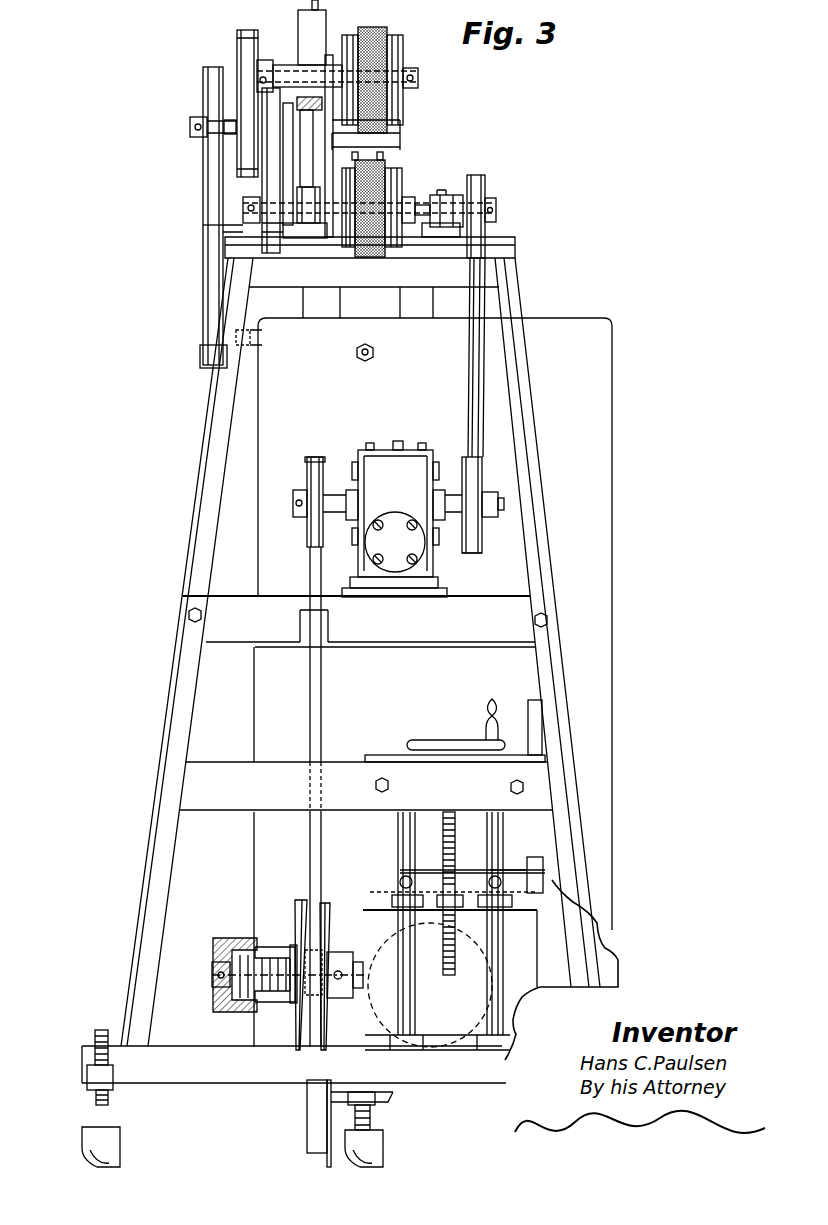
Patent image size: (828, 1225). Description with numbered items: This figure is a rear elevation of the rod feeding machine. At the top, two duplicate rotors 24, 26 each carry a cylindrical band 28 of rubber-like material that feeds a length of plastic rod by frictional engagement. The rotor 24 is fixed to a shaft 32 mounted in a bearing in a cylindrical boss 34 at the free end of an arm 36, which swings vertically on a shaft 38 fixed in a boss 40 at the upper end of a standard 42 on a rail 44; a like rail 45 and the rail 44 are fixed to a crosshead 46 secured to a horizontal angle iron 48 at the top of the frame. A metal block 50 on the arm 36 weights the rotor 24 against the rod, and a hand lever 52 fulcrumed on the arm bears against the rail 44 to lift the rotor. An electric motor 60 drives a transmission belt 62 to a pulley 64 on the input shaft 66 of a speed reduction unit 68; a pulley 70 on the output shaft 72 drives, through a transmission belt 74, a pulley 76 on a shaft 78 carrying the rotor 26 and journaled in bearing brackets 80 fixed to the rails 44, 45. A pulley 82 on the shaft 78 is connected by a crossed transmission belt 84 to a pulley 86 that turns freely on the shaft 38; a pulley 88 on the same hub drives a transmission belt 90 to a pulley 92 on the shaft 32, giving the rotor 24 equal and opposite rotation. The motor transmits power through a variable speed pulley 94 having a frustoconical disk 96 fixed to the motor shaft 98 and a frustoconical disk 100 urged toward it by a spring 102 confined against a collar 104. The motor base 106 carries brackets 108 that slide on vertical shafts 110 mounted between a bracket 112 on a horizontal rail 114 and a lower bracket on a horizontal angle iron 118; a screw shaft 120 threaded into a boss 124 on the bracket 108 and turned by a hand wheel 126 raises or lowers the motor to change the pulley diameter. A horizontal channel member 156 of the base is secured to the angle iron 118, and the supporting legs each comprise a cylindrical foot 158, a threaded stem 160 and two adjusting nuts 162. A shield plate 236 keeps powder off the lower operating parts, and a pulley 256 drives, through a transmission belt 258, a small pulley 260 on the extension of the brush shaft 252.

The rotor 24 is at (404, 113).
The rotor 26 is at (400, 183).
The cylindrical band 28 is at (373, 33).
The shaft 32 is at (414, 76).
The cylindrical boss 34 is at (312, 77).
The arm 36 is at (350, 148).
The shaft 38 is at (190, 127).
The boss 40 is at (312, 140).
The standard 42 is at (245, 201).
The rail 44 is at (303, 232).
The rail 45 is at (445, 231).
The crosshead 46 is at (325, 240).
The horizontal angle iron 48 is at (373, 288).
The metal block 50 is at (304, 36).
The hand lever 52 is at (322, 188).
The electric motor 60 is at (392, 930).
The transmission belt 62 is at (311, 838).
The pulley 64 is at (307, 486).
The input shaft 66 is at (340, 500).
The speed reduction unit 68 is at (395, 462).
The pulley 70 is at (483, 535).
The output shaft 72 is at (460, 517).
The transmission belt 74 is at (472, 442).
The pulley 76 is at (487, 187).
The shaft 78 is at (497, 210).
The bearing brackets 80 is at (448, 200).
The pulley 82 is at (230, 228).
The transmission belt 84 is at (290, 175).
The pulley 86 is at (262, 98).
The pulley 88 is at (270, 152).
The transmission belt 90 is at (248, 58).
The pulley 92 is at (240, 36).
The variable speed pulley 94 is at (277, 962).
The frustoconical disk 96 is at (339, 889).
The motor shaft 98 is at (358, 997).
The frustoconical disk 100 is at (300, 905).
The spring 102 is at (238, 943).
The collar 104 is at (226, 1005).
The motor base 106 is at (525, 938).
The brackets 108 is at (522, 886).
The vertical shafts 110 is at (490, 994).
The bracket 112 is at (377, 760).
The horizontal rail 114 is at (283, 777).
The horizontal angle iron 118 is at (215, 1072).
The screw shaft 120 is at (443, 836).
The internally threaded boss 124 is at (457, 912).
The hand wheel 126 is at (447, 748).
The horizontal channel member 156 is at (362, 1092).
The cylindrical foot 158 is at (365, 1151).
The threaded stem 160 is at (365, 1125).
The nuts 162 is at (368, 1101).
The shield plate 236 is at (605, 452).
The shaft 252 is at (257, 343).
The pulley 256 is at (204, 82).
The transmission belt 258 is at (208, 229).
The small pulley 260 is at (203, 352).